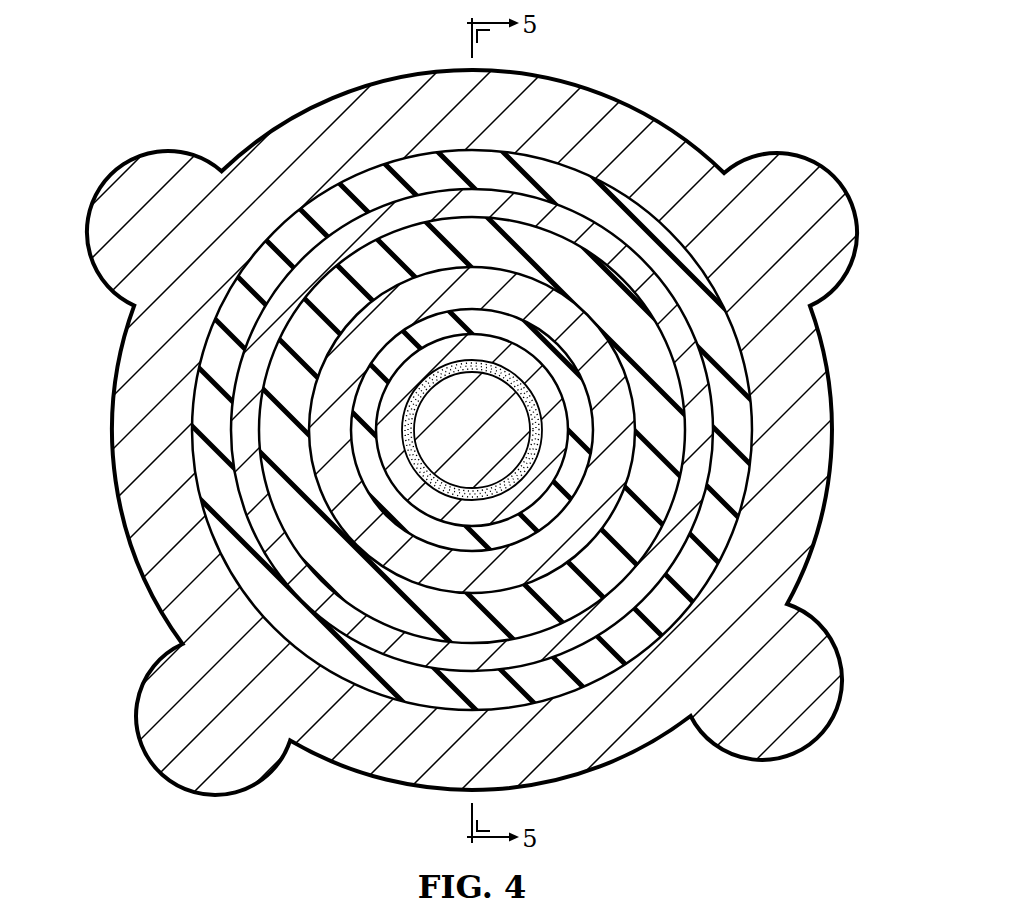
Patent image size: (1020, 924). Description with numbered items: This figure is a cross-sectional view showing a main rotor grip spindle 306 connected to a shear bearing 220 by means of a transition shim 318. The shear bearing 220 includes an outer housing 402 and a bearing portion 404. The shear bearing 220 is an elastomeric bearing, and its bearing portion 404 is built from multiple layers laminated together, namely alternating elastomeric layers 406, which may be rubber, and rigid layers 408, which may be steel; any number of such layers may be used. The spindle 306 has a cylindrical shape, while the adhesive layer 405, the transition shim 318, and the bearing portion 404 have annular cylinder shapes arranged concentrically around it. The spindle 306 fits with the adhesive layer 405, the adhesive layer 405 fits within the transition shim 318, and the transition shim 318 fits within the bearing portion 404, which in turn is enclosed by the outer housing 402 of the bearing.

The shear bearing 220 is at (316, 103).
The outer housing 402 is at (631, 118).
The bearing portion 404 is at (188, 407).
The elastomeric layers 406 is at (740, 405).
The rigid layers 408 is at (238, 448).
The transition shim 318 is at (510, 462).
The adhesive layer 405 is at (526, 588).
The main rotor grip spindle 306 is at (450, 445).